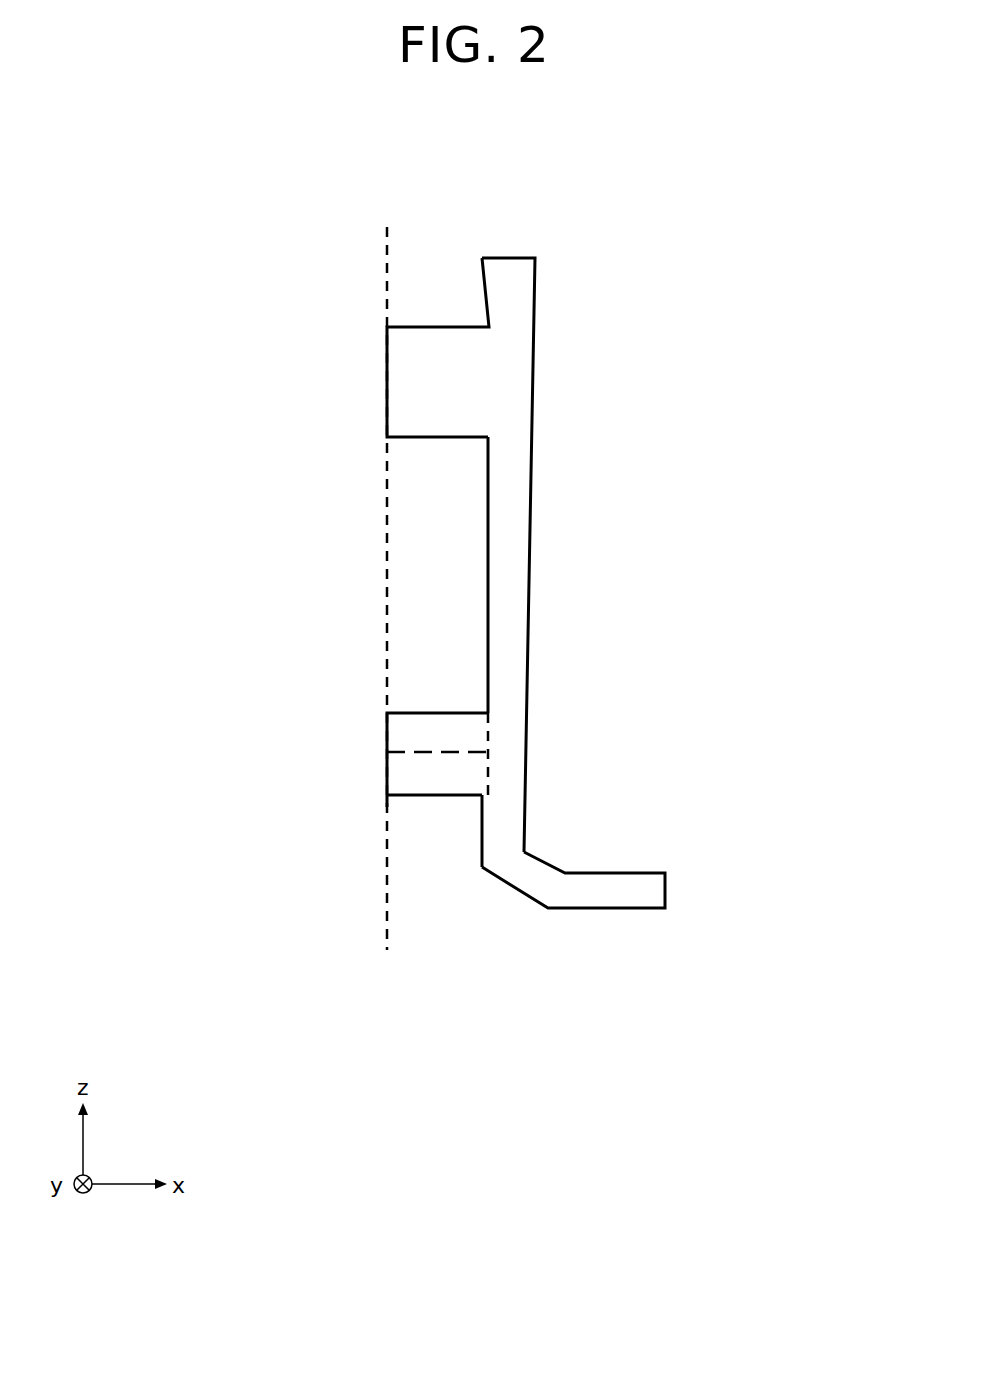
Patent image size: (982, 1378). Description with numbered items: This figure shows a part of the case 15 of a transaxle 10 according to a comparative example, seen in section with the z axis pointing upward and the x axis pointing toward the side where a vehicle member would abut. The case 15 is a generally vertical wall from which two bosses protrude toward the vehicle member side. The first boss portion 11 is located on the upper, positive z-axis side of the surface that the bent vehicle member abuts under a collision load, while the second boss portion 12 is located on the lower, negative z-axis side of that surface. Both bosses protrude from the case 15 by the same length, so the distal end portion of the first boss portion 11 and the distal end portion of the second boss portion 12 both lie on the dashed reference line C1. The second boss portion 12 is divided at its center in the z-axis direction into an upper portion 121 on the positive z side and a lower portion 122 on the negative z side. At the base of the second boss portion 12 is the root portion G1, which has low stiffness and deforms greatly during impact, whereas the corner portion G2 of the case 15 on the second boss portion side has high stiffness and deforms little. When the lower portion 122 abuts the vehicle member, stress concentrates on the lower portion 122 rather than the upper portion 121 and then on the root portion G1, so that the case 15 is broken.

The transaxle 10 is at (540, 233).
The first boss portion 11 is at (398, 385).
The second boss portion 12 is at (399, 752).
The upper portion 121 is at (445, 732).
The lower portion 122 is at (458, 772).
The case 15 is at (518, 483).
The root portion G1 is at (490, 815).
The corner portion G2 is at (518, 873).
The reference line C1 is at (388, 260).